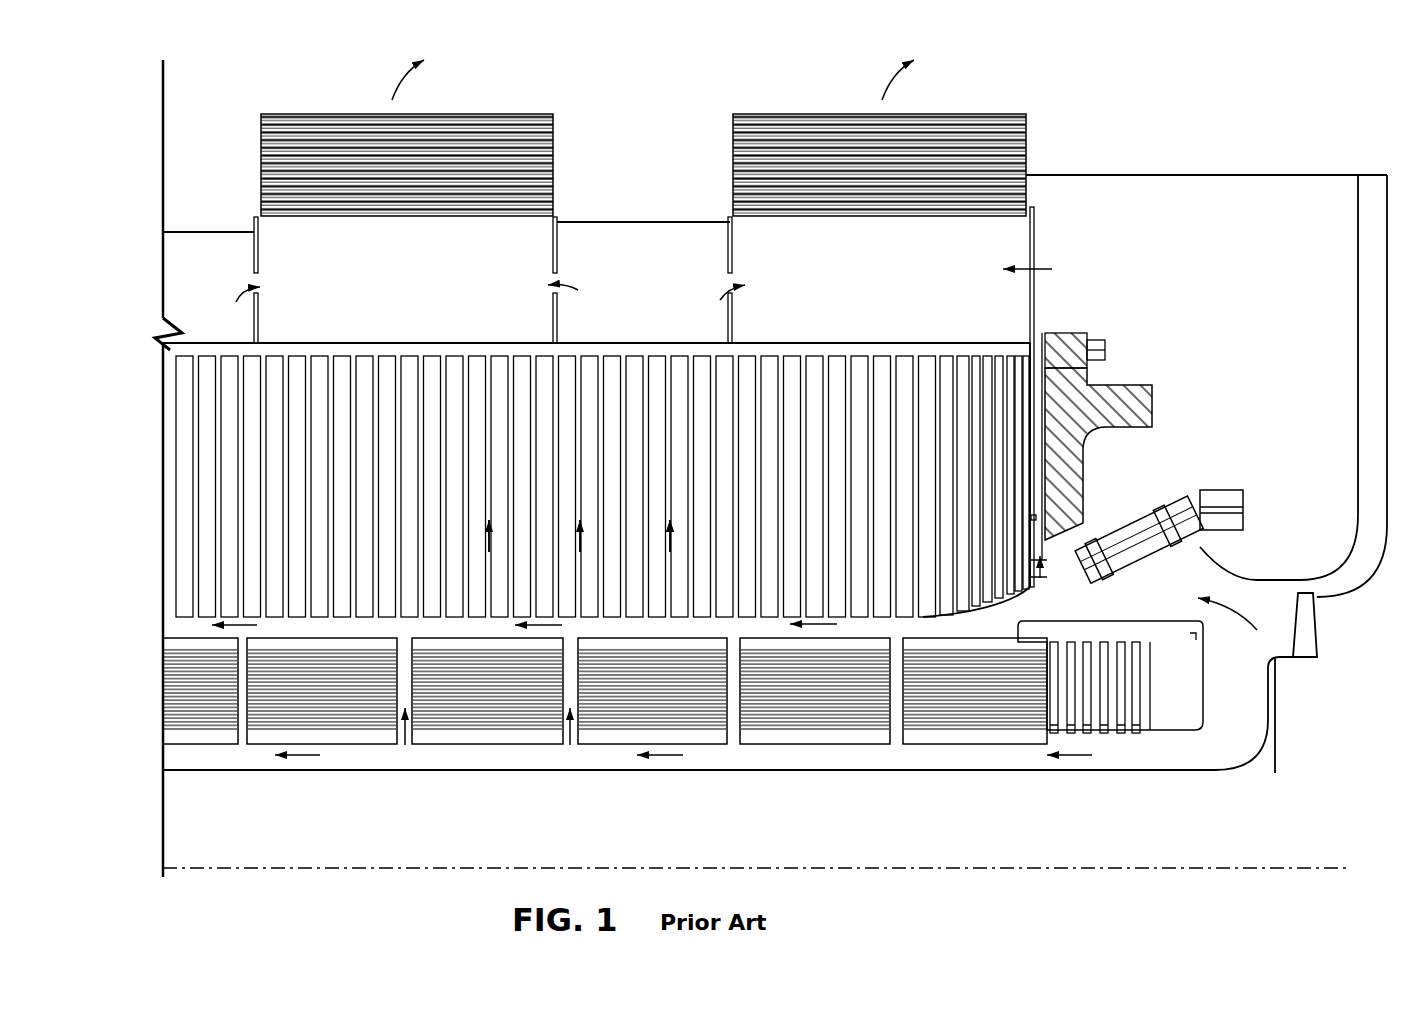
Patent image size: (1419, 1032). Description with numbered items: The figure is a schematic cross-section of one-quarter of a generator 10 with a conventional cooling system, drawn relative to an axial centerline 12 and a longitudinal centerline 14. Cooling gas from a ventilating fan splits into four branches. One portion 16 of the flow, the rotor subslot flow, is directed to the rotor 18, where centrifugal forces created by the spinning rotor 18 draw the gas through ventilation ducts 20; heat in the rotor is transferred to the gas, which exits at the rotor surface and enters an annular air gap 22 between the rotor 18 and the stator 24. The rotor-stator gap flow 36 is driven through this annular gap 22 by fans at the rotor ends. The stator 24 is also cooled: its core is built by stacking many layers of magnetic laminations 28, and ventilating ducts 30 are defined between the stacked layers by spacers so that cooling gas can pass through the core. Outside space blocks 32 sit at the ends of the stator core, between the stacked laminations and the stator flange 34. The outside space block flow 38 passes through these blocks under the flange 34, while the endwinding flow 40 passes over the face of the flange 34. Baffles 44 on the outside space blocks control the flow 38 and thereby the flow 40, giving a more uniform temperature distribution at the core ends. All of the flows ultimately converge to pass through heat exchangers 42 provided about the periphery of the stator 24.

The generator 10 is at (1182, 265).
The axial centerline 12 is at (490, 866).
The longitudinal centerline 14 is at (165, 672).
The portion of the flow of cooling gases 16 is at (1313, 615).
The rotor 18 is at (338, 842).
The ventilation ducts 20 is at (403, 705).
The annular air gap 22 is at (850, 632).
The stator 24 is at (150, 360).
The magnetic laminations 28 is at (1026, 343).
The ventilating ducts 30 is at (670, 352).
The outside space blocks 32 is at (1058, 333).
The stator flange 34 is at (1138, 393).
The rotor-stator gap flow 36 is at (1021, 611).
The outside space block flow 38 is at (1074, 550).
The endwinding flow 40 is at (1283, 525).
The heat exchangers 42 is at (522, 183).
The baffles 44 is at (1043, 510).